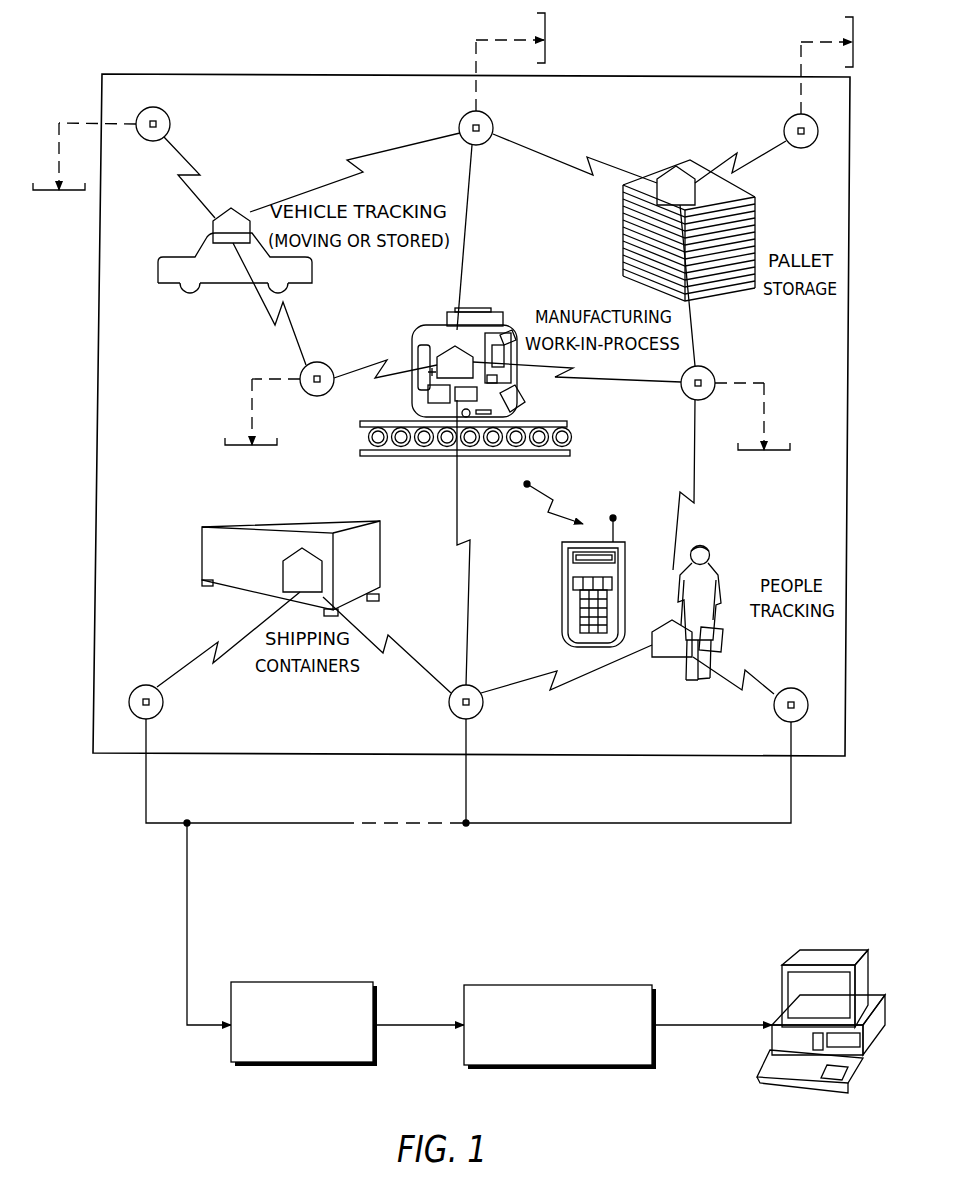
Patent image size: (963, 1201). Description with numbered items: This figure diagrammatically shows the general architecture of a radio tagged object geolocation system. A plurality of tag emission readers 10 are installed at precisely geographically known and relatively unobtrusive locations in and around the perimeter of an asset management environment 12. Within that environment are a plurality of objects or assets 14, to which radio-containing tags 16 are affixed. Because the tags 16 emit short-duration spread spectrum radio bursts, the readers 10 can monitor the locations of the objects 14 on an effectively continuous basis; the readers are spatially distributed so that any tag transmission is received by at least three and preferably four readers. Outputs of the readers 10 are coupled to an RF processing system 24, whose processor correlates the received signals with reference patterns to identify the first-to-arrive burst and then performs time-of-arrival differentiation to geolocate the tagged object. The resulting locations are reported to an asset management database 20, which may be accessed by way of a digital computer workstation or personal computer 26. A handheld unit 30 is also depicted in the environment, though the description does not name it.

The tag emission reader 10 is at (332, 394).
The asset management environment 12 is at (290, 74).
The object/asset 14 is at (166, 290).
The tag 16 is at (228, 212).
The asset management database 20 is at (520, 985).
The RF processing system 24 is at (290, 982).
The digital computer workstation or personal computer 26 is at (822, 945).
The handheld reader 30 is at (626, 553).